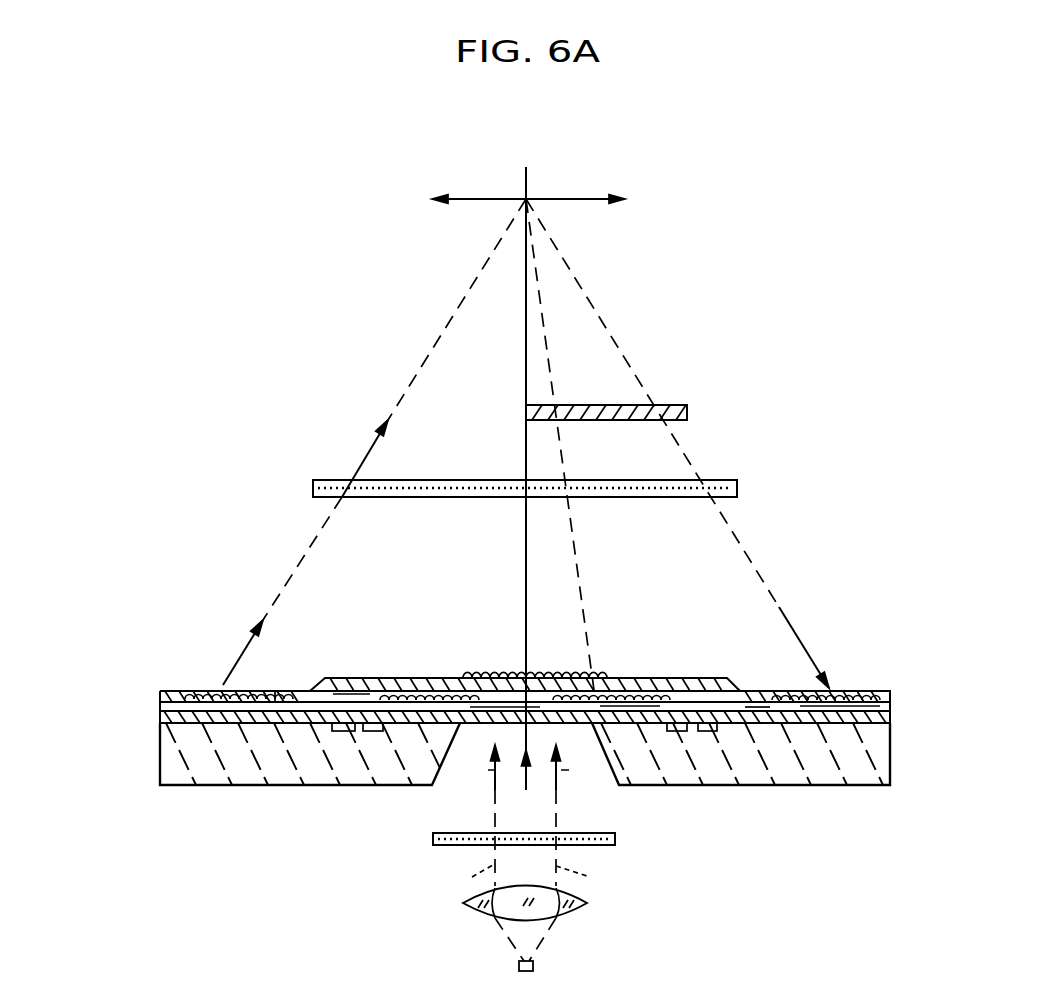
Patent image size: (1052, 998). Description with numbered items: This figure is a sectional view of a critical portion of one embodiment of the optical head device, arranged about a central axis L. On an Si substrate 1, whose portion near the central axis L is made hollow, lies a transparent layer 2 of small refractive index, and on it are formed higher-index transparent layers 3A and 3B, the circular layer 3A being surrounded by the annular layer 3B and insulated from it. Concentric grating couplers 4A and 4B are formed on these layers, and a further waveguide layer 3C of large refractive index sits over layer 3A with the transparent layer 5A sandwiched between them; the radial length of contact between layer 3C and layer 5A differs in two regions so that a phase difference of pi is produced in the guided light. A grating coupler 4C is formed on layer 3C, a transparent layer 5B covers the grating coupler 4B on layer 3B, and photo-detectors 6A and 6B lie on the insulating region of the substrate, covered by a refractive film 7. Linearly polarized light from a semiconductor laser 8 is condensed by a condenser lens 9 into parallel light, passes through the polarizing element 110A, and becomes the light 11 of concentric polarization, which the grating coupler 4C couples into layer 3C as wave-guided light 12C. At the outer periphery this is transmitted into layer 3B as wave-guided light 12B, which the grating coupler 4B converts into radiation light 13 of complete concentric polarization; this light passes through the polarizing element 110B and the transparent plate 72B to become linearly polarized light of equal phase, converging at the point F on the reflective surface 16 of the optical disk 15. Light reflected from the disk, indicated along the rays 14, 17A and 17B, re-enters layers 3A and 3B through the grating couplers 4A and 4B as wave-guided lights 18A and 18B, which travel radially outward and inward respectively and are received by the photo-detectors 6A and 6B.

The Si substrate 1 is at (233, 762).
The transparent layer 2 is at (160, 718).
The transparent layer 3A is at (423, 728).
The transparent layer 3B is at (160, 697).
The transparent layer 3C is at (660, 691).
The grating coupler 4A is at (385, 678).
The grating coupler 4B is at (190, 691).
The grating coupler 4C is at (505, 676).
The transparent layer 5A is at (540, 698).
The transparent layer 5B is at (275, 691).
The photo-detector 6A is at (677, 733).
The photo-detector 6B is at (717, 733).
The refractive film 7 is at (725, 700).
The semiconductor laser 8 is at (519, 966).
The condenser lens 9 is at (490, 913).
The light 11 is at (520, 790).
The wave-guided light 12B is at (268, 725).
The wave-guided light 12C is at (405, 698).
The radiation light 13 is at (247, 646).
The light beam 14 is at (372, 443).
The optical disk 15 is at (497, 192).
The reflective surface 16 is at (585, 204).
The light beam 17A is at (592, 660).
The light beam 17B is at (807, 642).
The wave-guided light 18A is at (633, 728).
The wave-guided light 18B is at (797, 733).
The transparent plate 72B is at (665, 405).
The polarizing element 110A is at (467, 848).
The polarizing element 110B is at (708, 481).
The central axis L is at (526, 550).
The point F is at (528, 198).